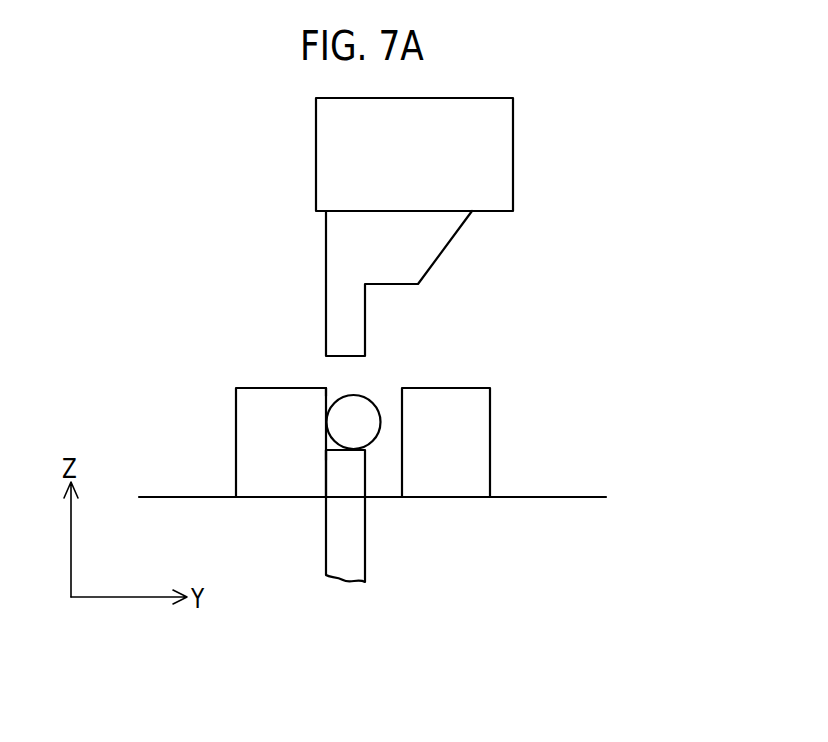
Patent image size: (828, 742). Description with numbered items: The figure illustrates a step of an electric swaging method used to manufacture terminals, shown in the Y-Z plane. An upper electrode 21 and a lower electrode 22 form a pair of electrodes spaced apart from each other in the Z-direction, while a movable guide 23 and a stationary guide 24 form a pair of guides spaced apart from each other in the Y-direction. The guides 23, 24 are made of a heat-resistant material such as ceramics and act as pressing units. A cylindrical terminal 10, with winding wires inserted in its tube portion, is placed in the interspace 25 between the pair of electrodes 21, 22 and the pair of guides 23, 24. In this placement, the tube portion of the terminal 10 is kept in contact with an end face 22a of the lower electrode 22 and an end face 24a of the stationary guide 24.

The cylindrical terminal 10 is at (353, 410).
The upper electrode 21 is at (513, 153).
The lower electrode 22 is at (367, 555).
The end face of the lower electrode 22a is at (320, 438).
The movable guide 23 is at (490, 438).
The stationary guide 24 is at (236, 433).
The end face of the stationary guide 24a is at (335, 395).
The interspace 25 is at (372, 383).